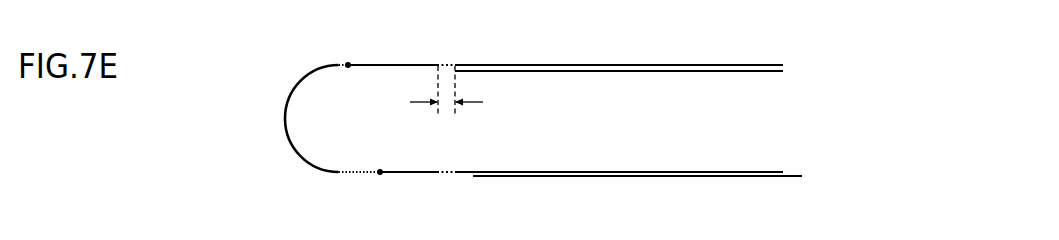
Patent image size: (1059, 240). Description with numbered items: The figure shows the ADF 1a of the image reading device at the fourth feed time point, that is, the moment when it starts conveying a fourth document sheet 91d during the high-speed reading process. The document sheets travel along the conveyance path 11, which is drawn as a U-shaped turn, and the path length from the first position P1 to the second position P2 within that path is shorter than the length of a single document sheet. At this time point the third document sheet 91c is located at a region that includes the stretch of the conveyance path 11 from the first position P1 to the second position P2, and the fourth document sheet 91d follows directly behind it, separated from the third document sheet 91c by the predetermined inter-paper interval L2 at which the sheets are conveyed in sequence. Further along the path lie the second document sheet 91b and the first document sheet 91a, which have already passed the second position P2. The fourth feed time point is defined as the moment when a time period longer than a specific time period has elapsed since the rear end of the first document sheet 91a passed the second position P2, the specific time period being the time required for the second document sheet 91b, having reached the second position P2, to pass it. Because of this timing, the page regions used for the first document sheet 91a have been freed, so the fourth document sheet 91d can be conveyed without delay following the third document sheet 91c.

The ADF 1a is at (240, 78).
The conveyance path 11 is at (288, 137).
The first position P1 is at (348, 65).
The second position P2 is at (380, 172).
The first document sheet 91a is at (695, 176).
The second document sheet 91b is at (503, 172).
The third document sheet 91c is at (372, 65).
The fourth document sheet 91d is at (562, 65).
The inter-paper interval L2 is at (446, 106).